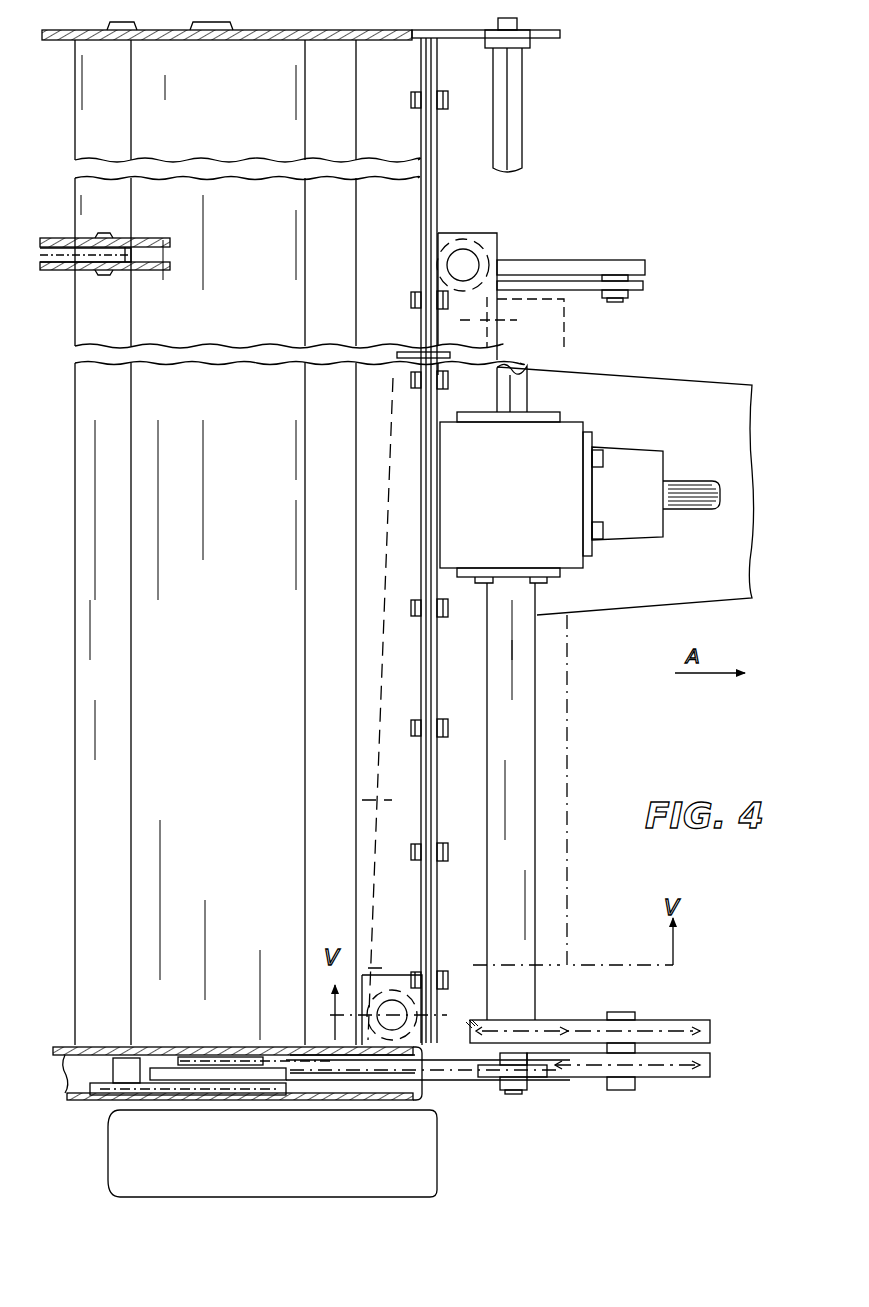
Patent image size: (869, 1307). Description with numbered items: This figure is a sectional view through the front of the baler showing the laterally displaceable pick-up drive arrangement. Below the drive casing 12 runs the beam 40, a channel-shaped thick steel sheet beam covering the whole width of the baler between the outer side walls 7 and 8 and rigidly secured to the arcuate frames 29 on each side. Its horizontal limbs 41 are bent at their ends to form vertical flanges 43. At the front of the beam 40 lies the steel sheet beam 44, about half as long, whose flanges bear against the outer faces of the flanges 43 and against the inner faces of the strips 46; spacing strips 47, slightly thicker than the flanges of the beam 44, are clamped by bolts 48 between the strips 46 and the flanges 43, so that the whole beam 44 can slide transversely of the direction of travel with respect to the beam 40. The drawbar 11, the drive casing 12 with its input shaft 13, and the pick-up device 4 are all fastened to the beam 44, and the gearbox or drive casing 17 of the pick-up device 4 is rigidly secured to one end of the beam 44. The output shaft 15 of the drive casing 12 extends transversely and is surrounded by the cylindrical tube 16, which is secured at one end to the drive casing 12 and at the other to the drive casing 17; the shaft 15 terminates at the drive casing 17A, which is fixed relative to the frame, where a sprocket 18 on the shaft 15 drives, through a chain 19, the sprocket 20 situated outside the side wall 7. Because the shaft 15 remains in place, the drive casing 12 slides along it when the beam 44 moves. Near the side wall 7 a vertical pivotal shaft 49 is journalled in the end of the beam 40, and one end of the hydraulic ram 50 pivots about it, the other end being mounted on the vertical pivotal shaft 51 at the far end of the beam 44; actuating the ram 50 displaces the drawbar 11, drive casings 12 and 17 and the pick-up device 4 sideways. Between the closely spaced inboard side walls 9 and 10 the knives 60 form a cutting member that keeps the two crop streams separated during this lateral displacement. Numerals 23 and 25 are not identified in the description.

The pick-up device 4 is at (604, 258).
The side wall 7 is at (62, 1047).
The side wall 8 is at (58, 42).
The side wall 9 is at (64, 270).
The side wall 10 is at (58, 238).
The drawbar 11 is at (690, 395).
The drive casing 12 is at (555, 440).
The input shaft 13 is at (702, 480).
The output shaft 15 is at (520, 98).
The cylindrical tube 16 is at (528, 710).
The drive casing 17 is at (684, 1020).
The drive casing 17A is at (700, 1078).
The sprocket 18 is at (493, 1078).
The chain 19 is at (374, 1075).
The sprocket 20 is at (275, 1068).
The drum shell 23 is at (145, 130).
The bearing 25 is at (100, 1096).
The arcuate frame 29 is at (288, 42).
The beam 40 is at (354, 112).
The limb 41 is at (368, 835).
The flange 43 is at (430, 912).
The steel sheet beam 44 is at (500, 250).
The strip 46 is at (436, 180).
The spacing strip 47 is at (432, 832).
The bolt 48 is at (410, 303).
The pivotal shaft 49 is at (396, 986).
The hydraulic ram 50 is at (498, 318).
The pivotal shaft 51 is at (464, 256).
The knife 60 is at (122, 259).